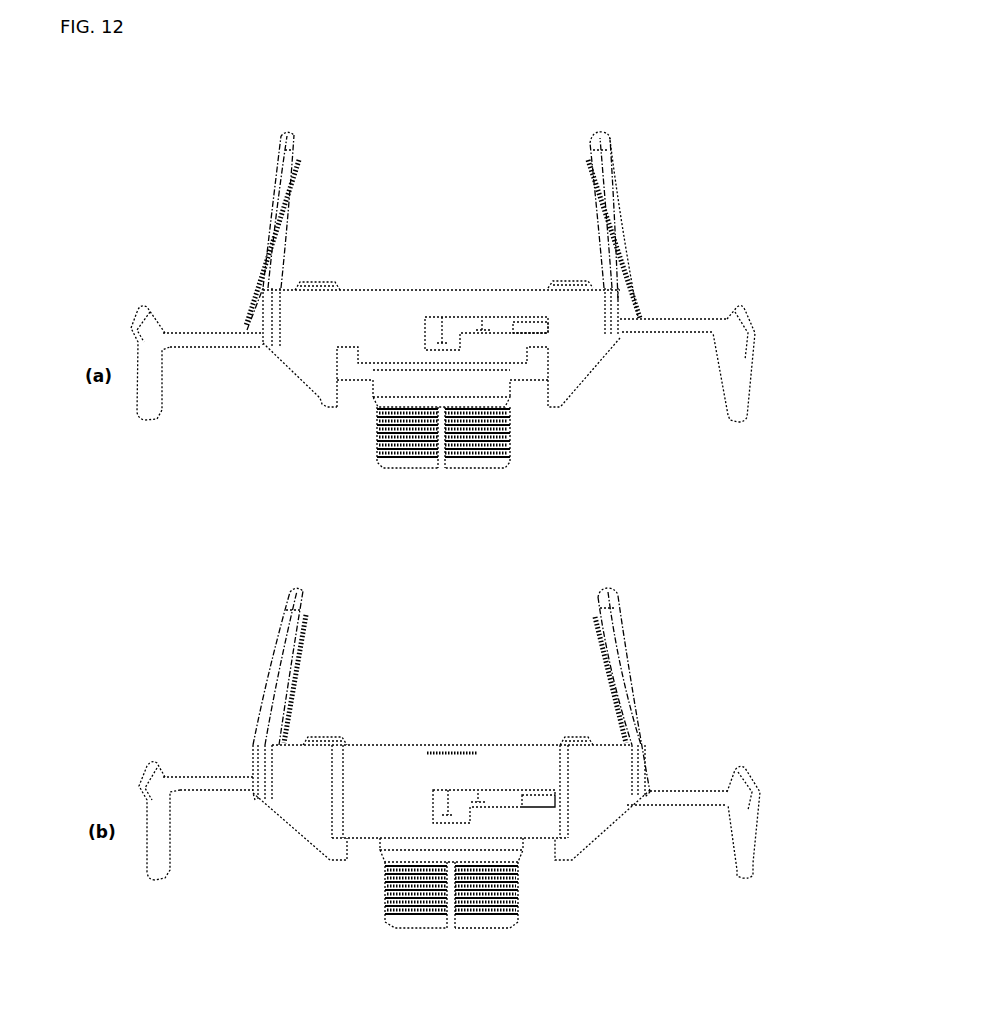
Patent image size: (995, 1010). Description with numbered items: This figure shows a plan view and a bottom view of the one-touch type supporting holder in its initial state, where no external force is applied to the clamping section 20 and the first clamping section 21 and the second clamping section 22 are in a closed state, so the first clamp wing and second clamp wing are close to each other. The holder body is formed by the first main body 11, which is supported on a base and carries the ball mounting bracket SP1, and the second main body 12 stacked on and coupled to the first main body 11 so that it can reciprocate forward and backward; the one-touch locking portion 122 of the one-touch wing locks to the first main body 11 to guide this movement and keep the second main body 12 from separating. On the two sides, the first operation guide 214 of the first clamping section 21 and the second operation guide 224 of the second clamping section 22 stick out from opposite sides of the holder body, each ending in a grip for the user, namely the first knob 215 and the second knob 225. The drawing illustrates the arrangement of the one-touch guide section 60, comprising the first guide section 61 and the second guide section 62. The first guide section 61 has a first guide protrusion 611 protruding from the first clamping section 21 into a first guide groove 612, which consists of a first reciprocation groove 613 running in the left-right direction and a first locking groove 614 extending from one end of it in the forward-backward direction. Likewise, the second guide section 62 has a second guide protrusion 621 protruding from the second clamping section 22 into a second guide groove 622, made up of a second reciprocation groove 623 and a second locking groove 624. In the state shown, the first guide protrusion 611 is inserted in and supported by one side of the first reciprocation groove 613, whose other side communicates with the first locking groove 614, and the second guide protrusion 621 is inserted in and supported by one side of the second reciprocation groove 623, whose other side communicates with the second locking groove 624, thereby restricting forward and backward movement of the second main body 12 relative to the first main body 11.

The clamping section 20 is at (457, 448).
The first clamping section 21 is at (624, 170).
The second clamping section 22 is at (266, 166).
The second main body 12 is at (363, 290).
The first main body 11 is at (360, 383).
The one-touch locking portion 122 is at (327, 417).
The first operation guide 214 is at (688, 319).
The first knob 215 is at (730, 400).
The second operation guide 224 is at (203, 333).
The second knob 225 is at (143, 396).
The one-touch guide section 60 is at (485, 502).
The first guide section 61 is at (485, 727).
The first guide protrusion 611 is at (542, 793).
The first guide groove 612 is at (456, 742).
The first reciprocation groove 613 is at (478, 797).
The first locking groove 614 is at (448, 790).
The second guide section 62 is at (483, 265).
The second guide protrusion 621 is at (538, 322).
The second guide groove 622 is at (462, 281).
The second reciprocation groove 623 is at (482, 320).
The second locking groove 624 is at (442, 317).
The ball mounting bracket SP1 is at (483, 470).